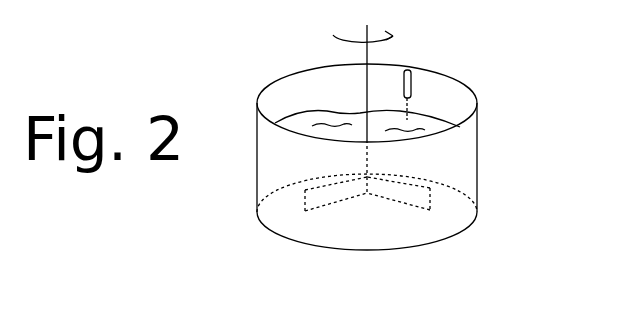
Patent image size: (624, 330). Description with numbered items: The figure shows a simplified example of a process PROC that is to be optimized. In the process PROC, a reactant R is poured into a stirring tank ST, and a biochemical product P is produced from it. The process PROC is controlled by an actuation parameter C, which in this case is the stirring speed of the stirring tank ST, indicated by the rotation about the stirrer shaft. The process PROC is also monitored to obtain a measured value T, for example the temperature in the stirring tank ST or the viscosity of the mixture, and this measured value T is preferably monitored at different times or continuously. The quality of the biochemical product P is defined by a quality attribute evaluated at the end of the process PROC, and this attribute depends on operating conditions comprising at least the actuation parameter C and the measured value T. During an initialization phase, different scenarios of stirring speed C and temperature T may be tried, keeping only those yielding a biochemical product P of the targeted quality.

The process PROC is at (205, 26).
The stirring tank ST is at (257, 147).
The actuation parameter C is at (371, 94).
The reactant R is at (300, 102).
The measured value T is at (413, 68).
The biochemical product P is at (501, 94).